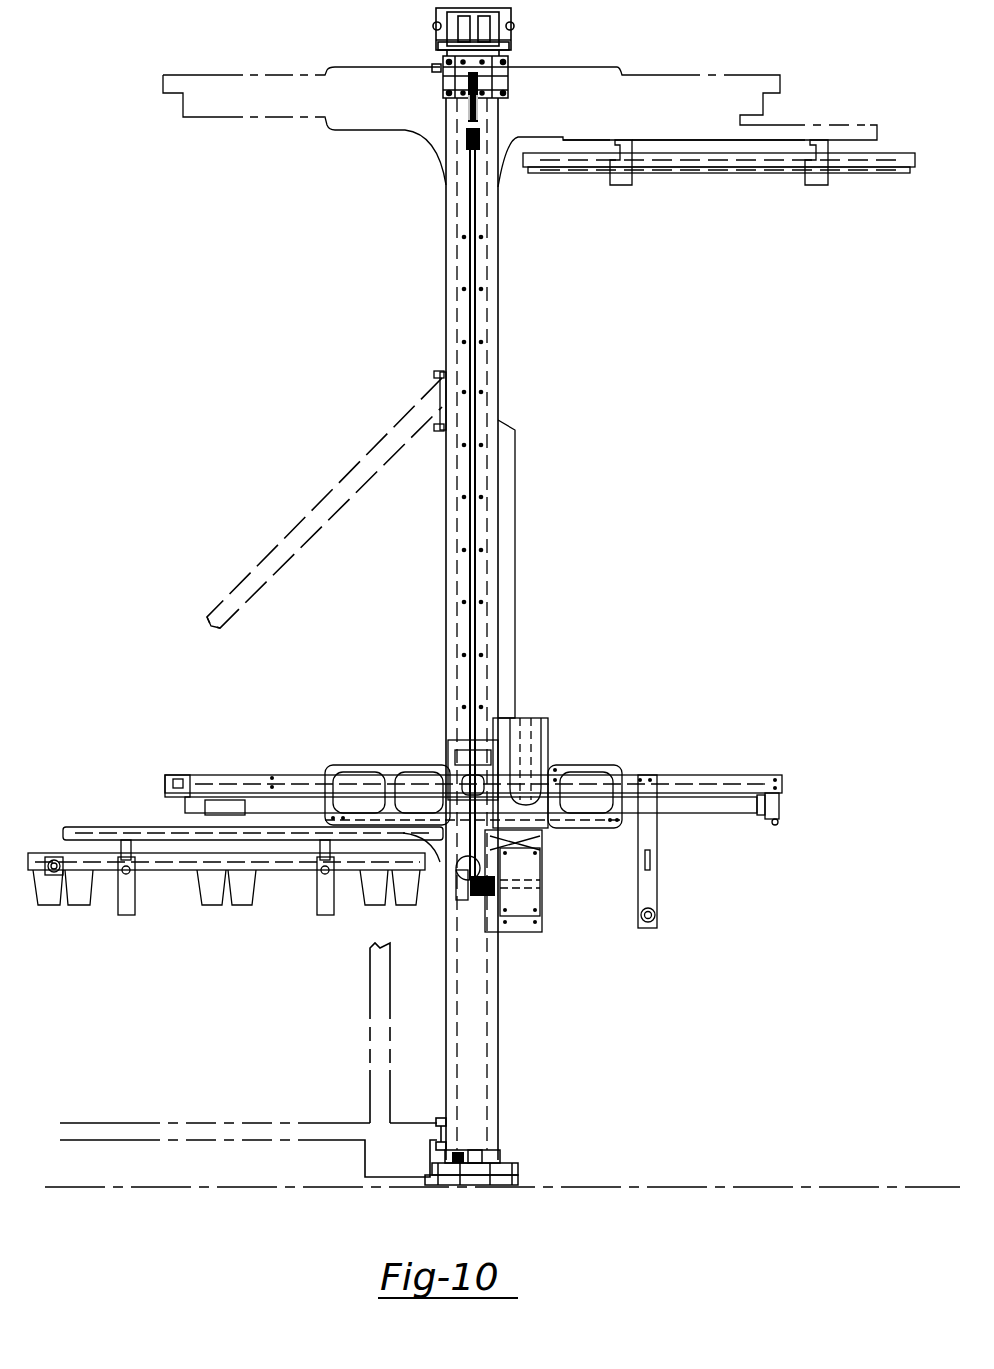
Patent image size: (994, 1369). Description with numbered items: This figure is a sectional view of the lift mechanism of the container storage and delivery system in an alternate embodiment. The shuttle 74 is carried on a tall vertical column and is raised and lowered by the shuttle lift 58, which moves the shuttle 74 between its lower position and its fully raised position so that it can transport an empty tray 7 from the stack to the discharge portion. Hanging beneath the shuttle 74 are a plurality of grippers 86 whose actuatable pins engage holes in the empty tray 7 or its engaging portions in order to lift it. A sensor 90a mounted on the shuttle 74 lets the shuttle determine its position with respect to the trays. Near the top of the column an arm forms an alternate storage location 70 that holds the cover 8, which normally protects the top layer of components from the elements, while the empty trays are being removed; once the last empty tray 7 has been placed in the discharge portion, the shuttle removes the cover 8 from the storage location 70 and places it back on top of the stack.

The storage location 70 is at (815, 125).
The cover 8 is at (890, 168).
The shuttle 74 is at (698, 780).
The sensor 90a is at (655, 918).
The shuttle lift 58 is at (545, 905).
The empty tray 7 is at (400, 905).
The grippers 86 is at (125, 913).